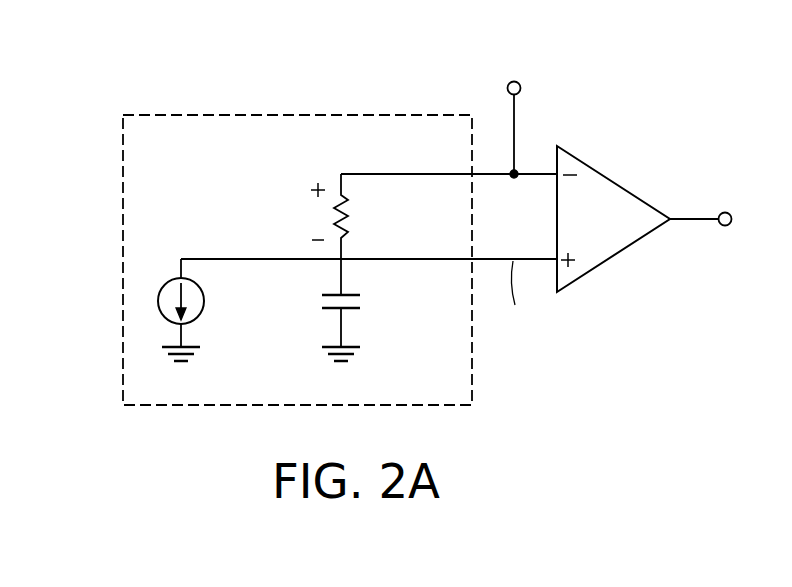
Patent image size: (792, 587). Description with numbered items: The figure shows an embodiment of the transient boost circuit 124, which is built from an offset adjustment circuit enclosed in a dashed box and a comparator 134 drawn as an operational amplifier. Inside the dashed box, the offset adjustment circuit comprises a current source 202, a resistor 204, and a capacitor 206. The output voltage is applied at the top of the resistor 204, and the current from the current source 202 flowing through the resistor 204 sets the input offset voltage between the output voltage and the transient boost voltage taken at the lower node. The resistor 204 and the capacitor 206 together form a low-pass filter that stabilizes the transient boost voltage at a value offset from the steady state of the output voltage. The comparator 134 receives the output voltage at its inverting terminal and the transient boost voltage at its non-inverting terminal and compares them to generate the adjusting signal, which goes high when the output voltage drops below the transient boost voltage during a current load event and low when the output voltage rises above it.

The transient boost circuit 124 is at (176, 27).
The comparator 134 is at (297, 116).
The current source 202 is at (205, 301).
The resistor 204 is at (352, 211).
The capacitor 206 is at (361, 303).